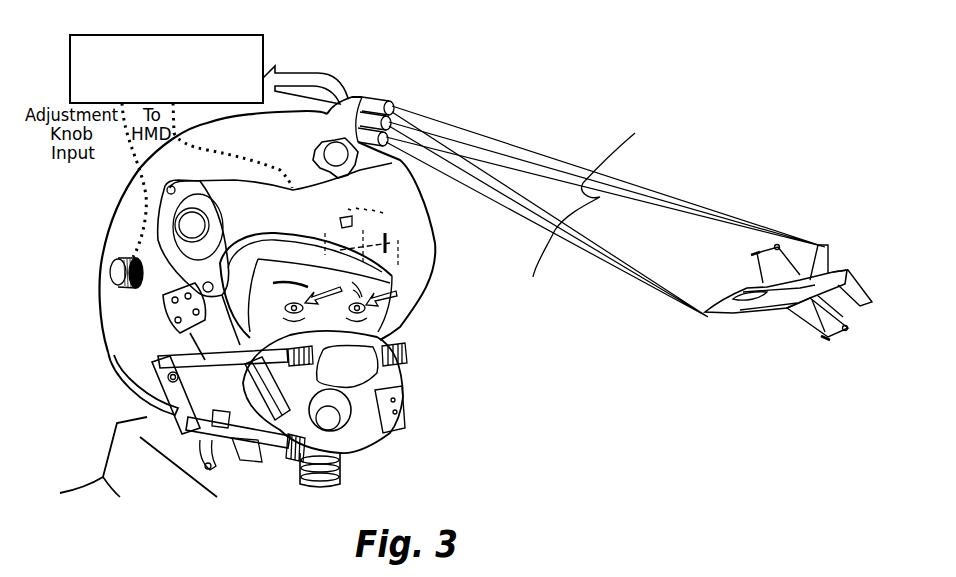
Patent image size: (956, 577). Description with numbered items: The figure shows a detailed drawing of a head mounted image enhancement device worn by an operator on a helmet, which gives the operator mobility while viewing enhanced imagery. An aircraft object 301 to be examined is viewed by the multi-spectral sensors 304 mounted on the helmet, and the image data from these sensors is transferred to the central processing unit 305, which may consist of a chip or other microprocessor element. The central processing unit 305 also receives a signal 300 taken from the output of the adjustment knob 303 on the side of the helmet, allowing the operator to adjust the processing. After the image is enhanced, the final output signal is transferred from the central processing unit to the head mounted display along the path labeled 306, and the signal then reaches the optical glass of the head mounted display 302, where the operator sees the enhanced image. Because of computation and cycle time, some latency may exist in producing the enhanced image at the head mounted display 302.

The signal 300 is at (136, 176).
The aircraft object 301 is at (829, 252).
The head mounted display (HMD) 302 is at (396, 228).
The adjustment knob 303 is at (110, 275).
The multi-spectral sensors 304 is at (382, 94).
The central processing unit 305 is at (163, 35).
The transfer of output signal to HMD 306 is at (205, 150).